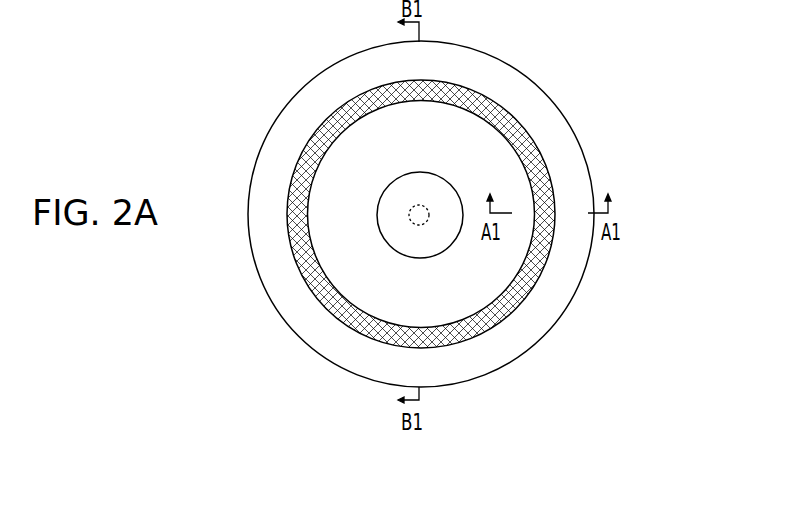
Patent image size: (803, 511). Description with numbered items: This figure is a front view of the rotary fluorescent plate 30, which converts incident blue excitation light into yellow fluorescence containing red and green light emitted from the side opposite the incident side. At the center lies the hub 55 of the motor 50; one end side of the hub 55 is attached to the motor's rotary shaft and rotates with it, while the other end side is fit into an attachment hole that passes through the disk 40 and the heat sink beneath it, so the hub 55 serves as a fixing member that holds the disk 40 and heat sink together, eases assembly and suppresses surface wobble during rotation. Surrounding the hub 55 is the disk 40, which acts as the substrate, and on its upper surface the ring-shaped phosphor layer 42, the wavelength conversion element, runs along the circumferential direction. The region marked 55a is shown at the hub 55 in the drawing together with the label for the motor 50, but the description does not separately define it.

The rotary fluorescent plate 30 is at (564, 58).
The disk 40 is at (478, 158).
The phosphor layer 42 is at (310, 138).
The hub 55 is at (430, 241).
The shaft center hole 55a is at (409, 217).
The motor 50 is at (365, 316).